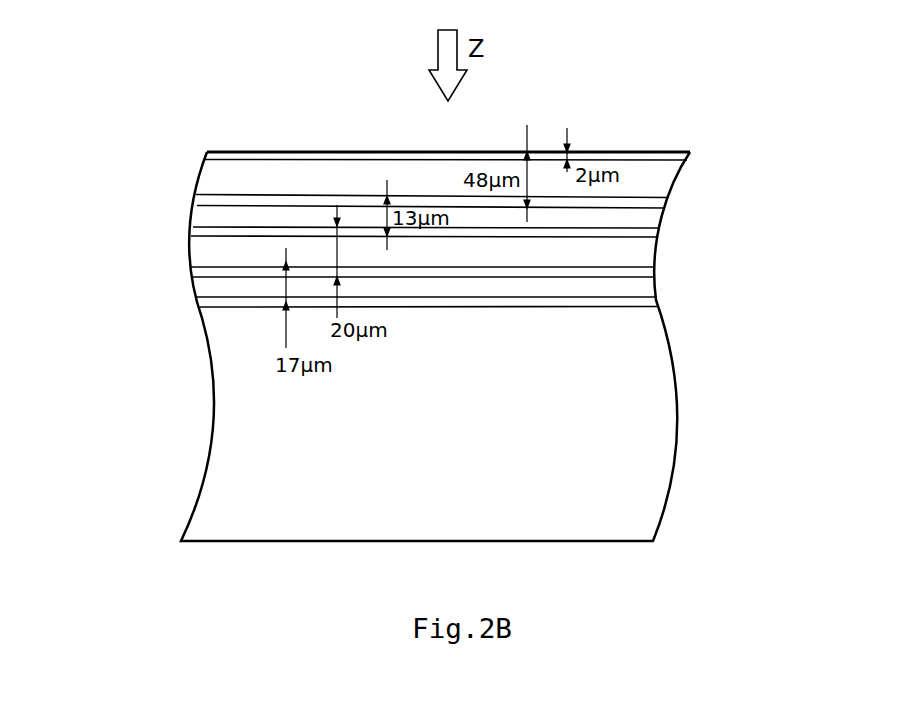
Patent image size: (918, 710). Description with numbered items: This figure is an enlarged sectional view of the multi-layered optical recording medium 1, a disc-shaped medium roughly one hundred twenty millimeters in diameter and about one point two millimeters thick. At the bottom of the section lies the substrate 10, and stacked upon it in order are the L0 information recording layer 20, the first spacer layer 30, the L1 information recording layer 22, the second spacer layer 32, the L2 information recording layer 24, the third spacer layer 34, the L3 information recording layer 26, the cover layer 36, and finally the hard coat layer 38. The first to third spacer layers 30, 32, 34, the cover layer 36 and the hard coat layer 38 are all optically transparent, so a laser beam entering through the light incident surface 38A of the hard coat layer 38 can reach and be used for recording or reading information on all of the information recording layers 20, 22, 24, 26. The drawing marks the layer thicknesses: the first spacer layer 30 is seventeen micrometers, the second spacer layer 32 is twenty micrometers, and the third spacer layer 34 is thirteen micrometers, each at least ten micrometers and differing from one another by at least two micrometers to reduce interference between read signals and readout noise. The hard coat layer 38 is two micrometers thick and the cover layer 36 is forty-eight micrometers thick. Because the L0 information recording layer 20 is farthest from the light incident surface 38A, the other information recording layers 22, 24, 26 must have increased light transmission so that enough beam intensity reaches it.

The multi-layered optical recording medium 1 is at (672, 113).
The substrate 10 is at (665, 465).
The L0 information recording layer 20 is at (652, 305).
The L1 information recording layer 22 is at (652, 273).
The L2 information recording layer 24 is at (652, 233).
The L3 information recording layer 26 is at (658, 203).
The first spacer layer 30 is at (205, 287).
The second spacer layer 32 is at (198, 252).
The third spacer layer 34 is at (204, 213).
The cover layer 36 is at (212, 182).
The hard coat layer 38 is at (207, 152).
The light incident surface 38A is at (250, 151).